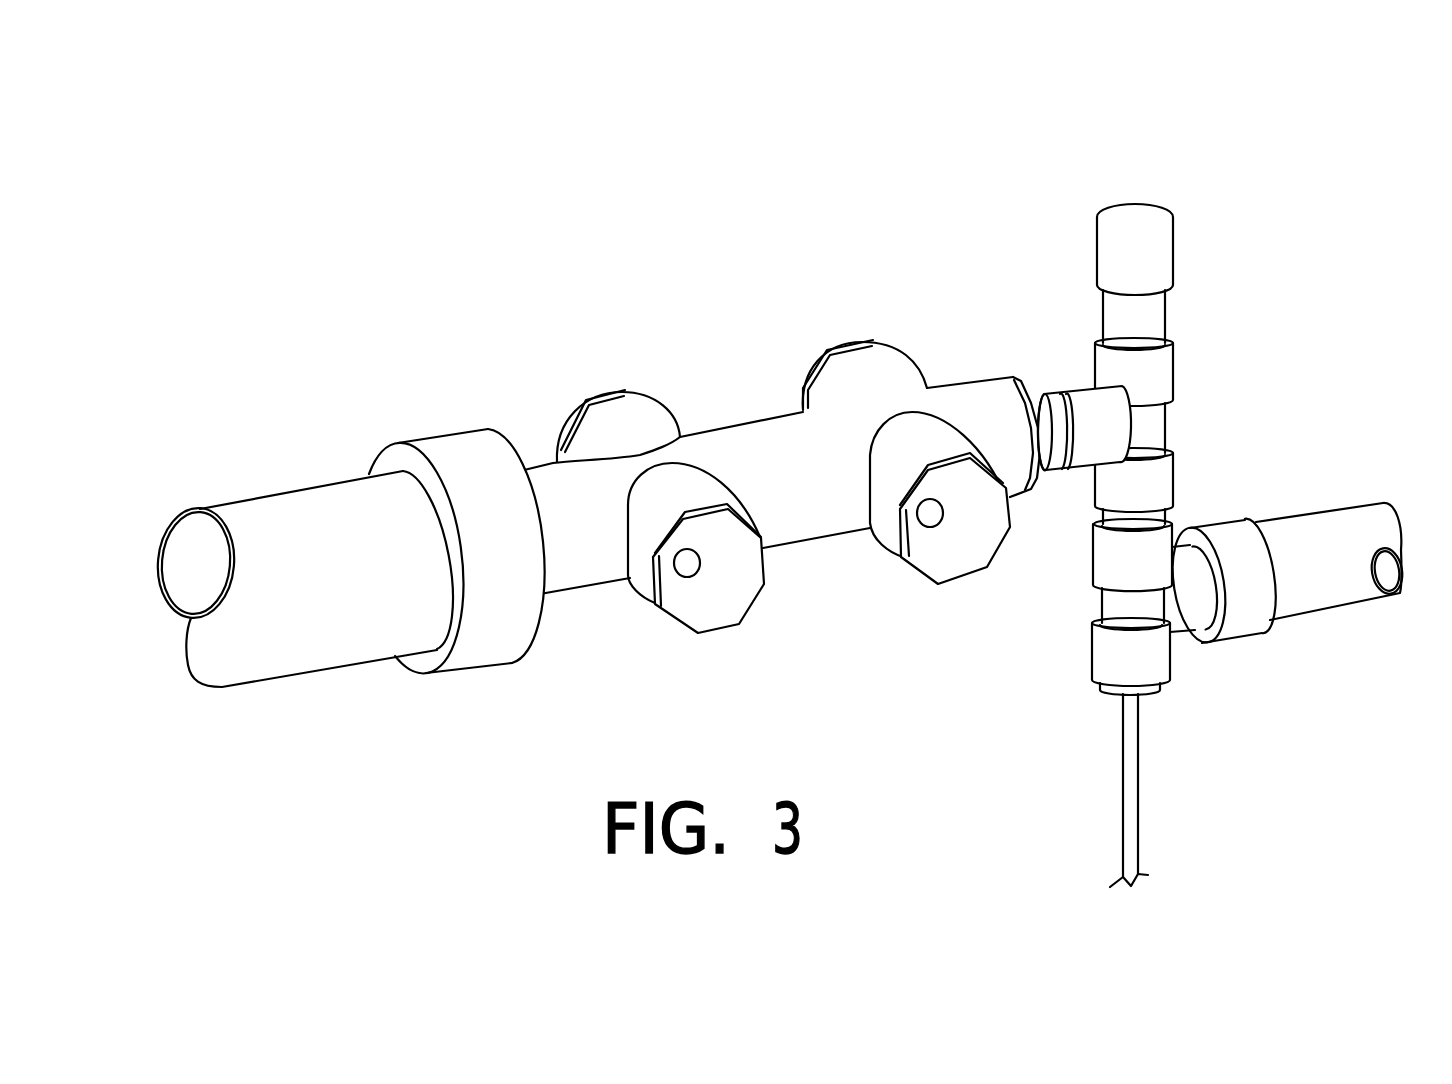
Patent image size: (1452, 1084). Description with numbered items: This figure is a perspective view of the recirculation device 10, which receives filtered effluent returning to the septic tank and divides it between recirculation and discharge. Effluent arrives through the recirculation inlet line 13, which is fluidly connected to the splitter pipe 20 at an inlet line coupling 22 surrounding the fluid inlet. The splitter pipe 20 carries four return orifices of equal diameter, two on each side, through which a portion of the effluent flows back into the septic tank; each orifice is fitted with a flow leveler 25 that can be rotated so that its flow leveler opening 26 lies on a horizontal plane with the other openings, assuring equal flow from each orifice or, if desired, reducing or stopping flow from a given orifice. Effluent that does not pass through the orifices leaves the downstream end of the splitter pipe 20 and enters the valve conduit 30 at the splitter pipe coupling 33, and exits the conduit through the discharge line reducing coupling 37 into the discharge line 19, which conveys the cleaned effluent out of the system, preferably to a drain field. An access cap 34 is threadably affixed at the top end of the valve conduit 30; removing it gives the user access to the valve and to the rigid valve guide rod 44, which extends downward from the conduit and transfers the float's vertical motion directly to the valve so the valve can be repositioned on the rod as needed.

The recirculation device 10 is at (723, 228).
The recirculation inlet line 13 is at (266, 523).
The discharge line 19 is at (1313, 595).
The splitter pipe 20 is at (748, 457).
The inlet line coupling 22 is at (455, 448).
The flow leveler 25 is at (591, 395).
The flow leveler opening 26 is at (688, 575).
The valve conduit 30 is at (1165, 482).
The splitter pipe coupling 33 is at (1073, 395).
The access cap 34 is at (1131, 218).
The discharge line reducing coupling 37 is at (1220, 534).
The valve guide rod 44 is at (1128, 745).